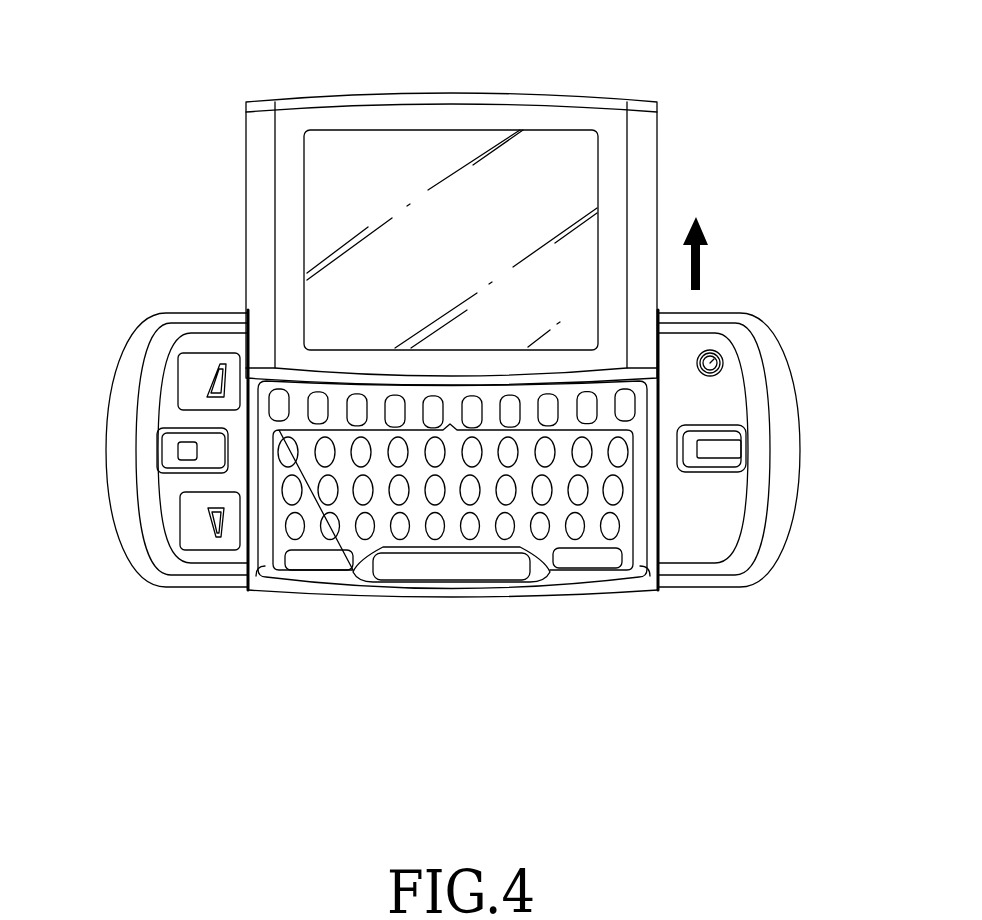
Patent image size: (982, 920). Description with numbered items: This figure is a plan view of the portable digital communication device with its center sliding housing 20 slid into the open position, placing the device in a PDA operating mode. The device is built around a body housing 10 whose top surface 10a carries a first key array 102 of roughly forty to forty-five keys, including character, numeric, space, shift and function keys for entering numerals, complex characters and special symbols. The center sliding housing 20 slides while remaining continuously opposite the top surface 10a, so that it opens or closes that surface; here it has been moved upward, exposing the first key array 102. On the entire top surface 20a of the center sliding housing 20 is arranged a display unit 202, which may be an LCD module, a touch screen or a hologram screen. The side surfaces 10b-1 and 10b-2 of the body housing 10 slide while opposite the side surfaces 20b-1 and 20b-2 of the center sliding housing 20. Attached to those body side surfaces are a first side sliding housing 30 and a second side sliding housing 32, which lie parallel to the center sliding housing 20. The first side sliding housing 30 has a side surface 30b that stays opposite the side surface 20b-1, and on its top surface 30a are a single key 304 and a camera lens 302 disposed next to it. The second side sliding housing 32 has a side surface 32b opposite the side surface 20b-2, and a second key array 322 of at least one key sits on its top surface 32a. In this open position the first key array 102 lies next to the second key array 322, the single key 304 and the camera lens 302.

The body housing 10 is at (488, 512).
The top surface 10a is at (352, 568).
The first key array 102 is at (507, 570).
The side surface 10b-1 is at (660, 498).
The side surface 10b-2 is at (253, 553).
The center sliding housing 20 is at (445, 197).
The display unit 202 is at (553, 140).
The top surface 20a is at (613, 145).
The side surface 20b-1 is at (657, 197).
The side surface 20b-2 is at (246, 200).
The first side sliding housing 30 is at (770, 475).
The top surface 30a is at (703, 538).
The side surface 30b is at (637, 572).
The camera lens 302 is at (712, 360).
The single key 304 is at (742, 450).
The second side sliding housing 32 is at (125, 446).
The top surface 32a is at (148, 505).
The side surface 32b is at (252, 580).
The second key array 322 is at (201, 372).